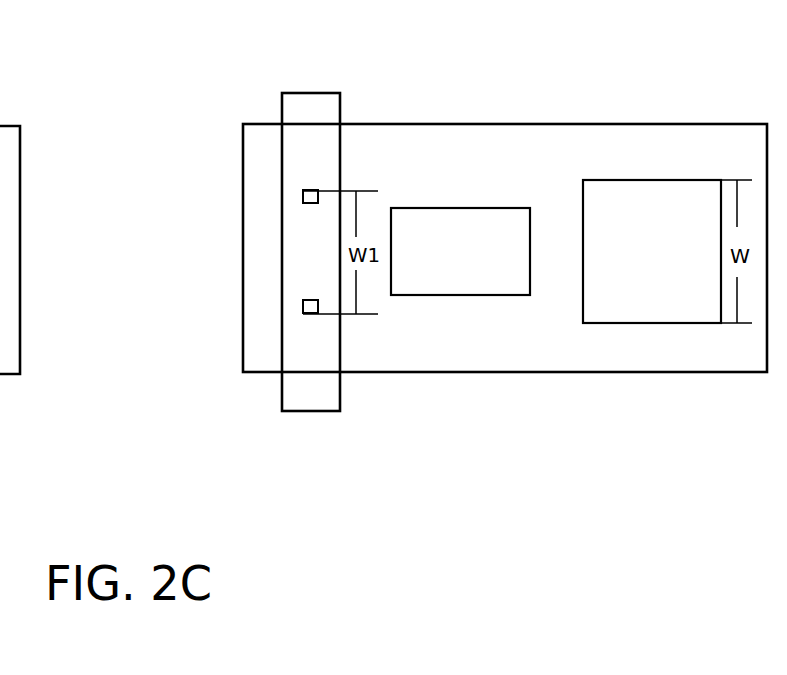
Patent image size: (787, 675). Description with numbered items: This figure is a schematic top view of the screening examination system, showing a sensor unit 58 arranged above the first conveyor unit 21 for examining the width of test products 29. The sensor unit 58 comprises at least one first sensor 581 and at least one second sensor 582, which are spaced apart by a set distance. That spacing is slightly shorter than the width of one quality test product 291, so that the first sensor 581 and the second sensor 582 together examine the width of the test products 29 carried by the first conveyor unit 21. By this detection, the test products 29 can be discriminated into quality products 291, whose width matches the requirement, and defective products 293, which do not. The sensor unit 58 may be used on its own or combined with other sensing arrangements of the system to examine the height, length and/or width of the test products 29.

The first conveyor unit 21 is at (630, 393).
The test products 29 is at (607, 68).
The quality products 291 is at (604, 183).
The defective products 293 is at (503, 208).
The sensor unit 58 is at (165, 218).
The first sensor 581 is at (303, 197).
The second sensor 582 is at (303, 303).